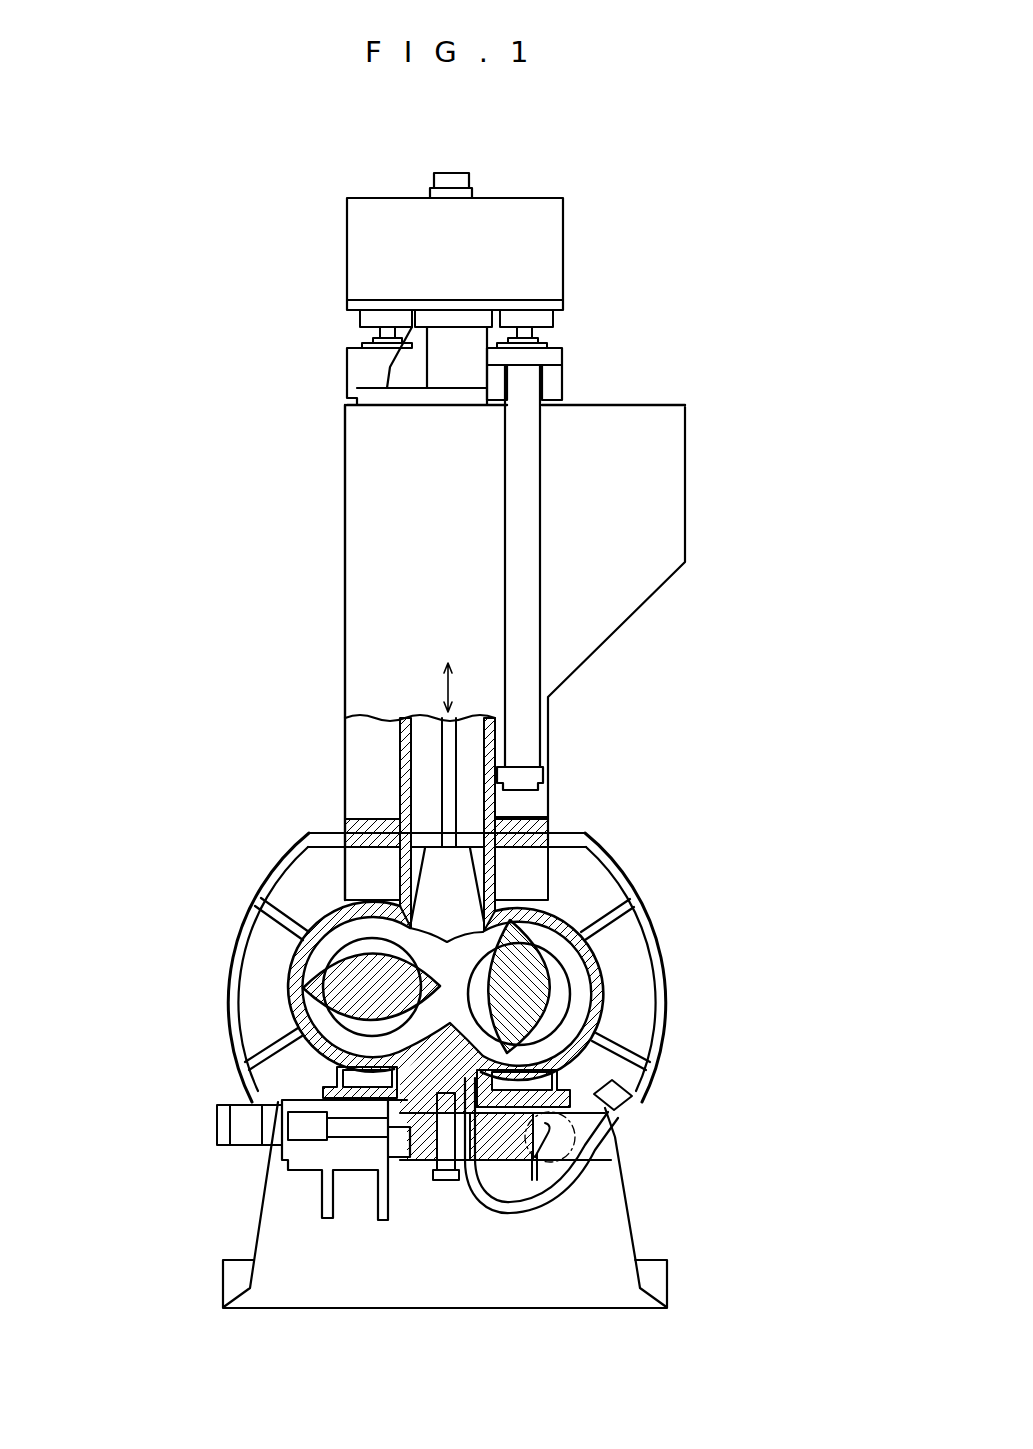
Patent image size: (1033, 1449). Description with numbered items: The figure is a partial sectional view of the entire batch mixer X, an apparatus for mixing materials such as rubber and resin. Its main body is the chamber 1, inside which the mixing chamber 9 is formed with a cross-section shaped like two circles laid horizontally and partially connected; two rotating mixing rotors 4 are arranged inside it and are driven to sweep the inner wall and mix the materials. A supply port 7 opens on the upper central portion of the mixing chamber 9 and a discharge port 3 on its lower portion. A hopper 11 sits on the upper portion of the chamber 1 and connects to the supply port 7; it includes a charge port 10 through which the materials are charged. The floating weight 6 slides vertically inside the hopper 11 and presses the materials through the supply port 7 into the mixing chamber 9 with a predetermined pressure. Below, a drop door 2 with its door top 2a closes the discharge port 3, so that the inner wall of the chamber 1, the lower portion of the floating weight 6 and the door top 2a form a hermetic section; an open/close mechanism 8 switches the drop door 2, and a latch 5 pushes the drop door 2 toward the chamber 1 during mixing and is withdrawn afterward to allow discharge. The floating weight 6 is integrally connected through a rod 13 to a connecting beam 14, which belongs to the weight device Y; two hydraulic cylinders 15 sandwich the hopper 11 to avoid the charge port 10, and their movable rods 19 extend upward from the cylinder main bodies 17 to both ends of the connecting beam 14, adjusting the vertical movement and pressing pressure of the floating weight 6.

The chamber 1 is at (245, 1003).
The drop door 2 is at (425, 1140).
The door top 2a is at (427, 1135).
The discharge port 3 is at (500, 1140).
The mixing rotor 4 is at (330, 977).
The latch 5 is at (363, 1128).
The floating weight 6 is at (453, 910).
The supply port 7 is at (435, 875).
The open/close mechanism 8 is at (568, 1137).
The mixing chamber 9 is at (568, 962).
The charge port 10 is at (628, 588).
The hopper 11 is at (400, 747).
The rod 13 is at (447, 742).
The connecting beam 14 is at (528, 238).
The hydraulic cylinder 15 is at (346, 335).
The cylinder main body 17 is at (518, 504).
The movable rod 19 is at (533, 333).
The batch mixer X is at (648, 859).
The weight device Y is at (309, 590).